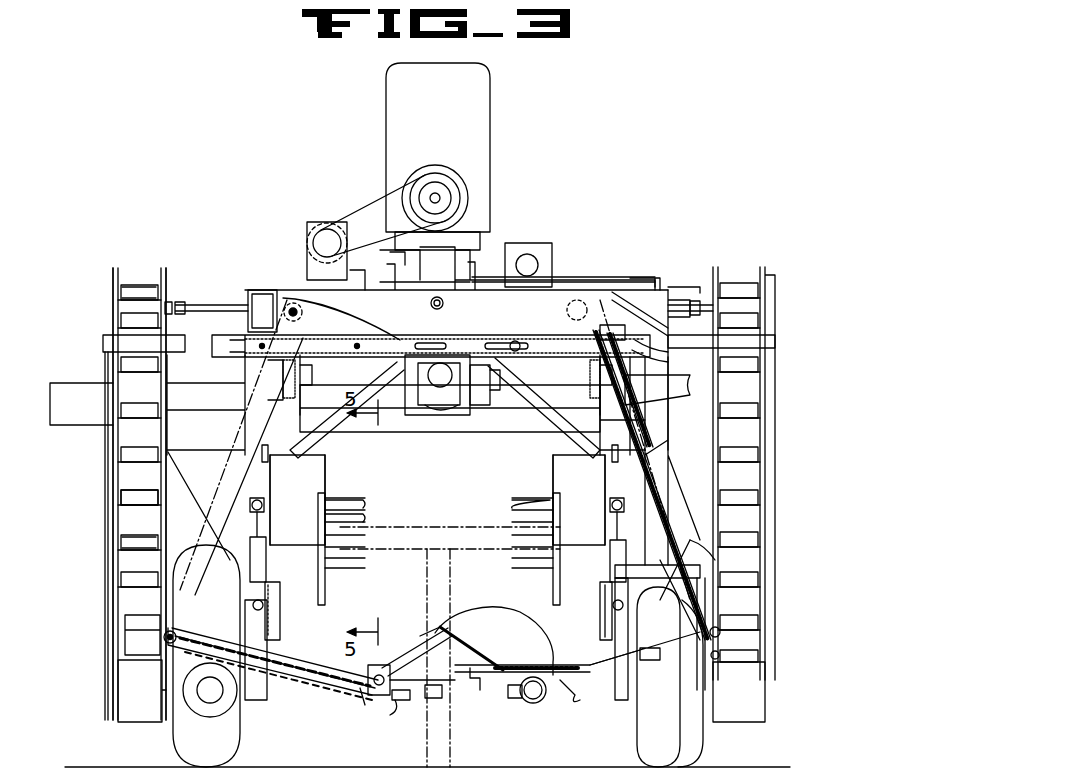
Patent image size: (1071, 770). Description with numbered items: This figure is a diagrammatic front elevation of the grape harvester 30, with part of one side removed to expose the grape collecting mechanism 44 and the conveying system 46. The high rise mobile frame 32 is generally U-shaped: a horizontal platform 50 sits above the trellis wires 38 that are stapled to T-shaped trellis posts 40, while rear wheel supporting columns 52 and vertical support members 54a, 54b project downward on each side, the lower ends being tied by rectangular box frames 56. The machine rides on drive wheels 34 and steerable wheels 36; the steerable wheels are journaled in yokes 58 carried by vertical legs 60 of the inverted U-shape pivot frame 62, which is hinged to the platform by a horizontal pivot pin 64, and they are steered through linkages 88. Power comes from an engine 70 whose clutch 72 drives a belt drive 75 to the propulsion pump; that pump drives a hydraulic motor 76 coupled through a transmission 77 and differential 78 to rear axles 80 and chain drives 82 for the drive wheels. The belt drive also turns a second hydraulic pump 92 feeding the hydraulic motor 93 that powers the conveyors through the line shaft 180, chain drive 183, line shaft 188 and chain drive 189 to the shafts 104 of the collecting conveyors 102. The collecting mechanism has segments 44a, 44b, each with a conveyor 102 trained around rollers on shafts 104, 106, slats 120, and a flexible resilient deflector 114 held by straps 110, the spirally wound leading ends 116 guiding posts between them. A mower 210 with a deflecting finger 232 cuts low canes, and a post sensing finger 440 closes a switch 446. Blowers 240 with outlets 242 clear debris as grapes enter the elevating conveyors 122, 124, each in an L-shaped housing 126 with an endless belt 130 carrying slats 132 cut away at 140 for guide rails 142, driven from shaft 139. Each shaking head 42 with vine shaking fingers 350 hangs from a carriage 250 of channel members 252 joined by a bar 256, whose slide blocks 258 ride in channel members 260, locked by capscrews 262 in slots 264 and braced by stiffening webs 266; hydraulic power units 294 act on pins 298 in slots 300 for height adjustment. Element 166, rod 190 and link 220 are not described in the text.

The grape harvester 30 is at (603, 103).
The high rise mobile frame 32 is at (260, 290).
The drive wheels 34 is at (183, 748).
The steerable wheels 36 is at (638, 758).
The trellis wires 38 is at (510, 519).
The T-shaped trellis posts 40 is at (378, 527).
The shaking heads 42 is at (332, 460).
The collecting mechanism 44 is at (338, 695).
The collecting mechanism segment 44a is at (418, 622).
The collecting mechanism segment 44b is at (472, 625).
The conveying system 46 is at (108, 292).
The horizontal platform 50 is at (355, 290).
The rear wheel supporting columns 52 is at (260, 700).
The vertical support member 54a is at (113, 508).
The vertical support member 54b is at (640, 636).
The box frames 56 is at (393, 705).
The yokes 58 is at (705, 591).
The vertical legs 60 is at (668, 464).
The pivot frame 62 is at (675, 285).
The horizontal pivot pin 64 is at (430, 303).
The engine 70 is at (447, 100).
The clutch 72 is at (462, 188).
The belt drive 75 is at (372, 206).
The hydraulic motor 76 is at (438, 392).
The transmission 77 is at (462, 410).
The differential 78 is at (475, 392).
The rear axles 80 is at (283, 385).
The chain drives 82 is at (600, 390).
The linkages 88 is at (585, 287).
The second hydraulic pump 92 is at (326, 230).
The hydraulic motor 93 is at (527, 255).
The collecting conveyor 102 is at (290, 660).
The shaft 104 is at (175, 632).
The shaft 106 is at (378, 695).
The straps 110 is at (460, 660).
The flexible resilient deflector 114 is at (395, 632).
The leading end of deflector 116 is at (540, 702).
The cross bars or slats 120 is at (320, 684).
The endless elevating conveyor 122 is at (108, 571).
The endless elevating conveyor 124 is at (765, 403).
The L-shaped housing 126 is at (112, 488).
The endless belt 130 is at (112, 466).
The bars or slats 132 is at (135, 284).
The shaft 139 is at (176, 300).
The cut away 140 is at (156, 505).
The guide rails 142 is at (125, 641).
The cross member 166 is at (60, 383).
The line shaft 180 is at (590, 305).
The chain drive 183 is at (695, 548).
The line shaft 188 is at (292, 300).
The chain drive 189 is at (215, 485).
The rod 190 is at (213, 306).
The mower 210 is at (545, 663).
The link 220 is at (639, 644).
The deflecting finger 232 is at (478, 687).
The blower 240 is at (208, 698).
The outlet 242 is at (178, 642).
The carriage 250 is at (245, 372).
The channel members 252 is at (325, 461).
The bar 256 is at (262, 608).
The slide block 258 is at (345, 342).
The channel members 260 is at (385, 325).
The capscrews 262 is at (500, 340).
The slots 264 is at (435, 342).
The stiffening webs 266 is at (338, 392).
The hydraulic power units 294 is at (262, 556).
The pins 298 is at (263, 503).
The slots 300 is at (262, 450).
The vine shaking fingers 350 is at (350, 500).
The post sensing finger 440 is at (455, 685).
The switch 446 is at (399, 712).